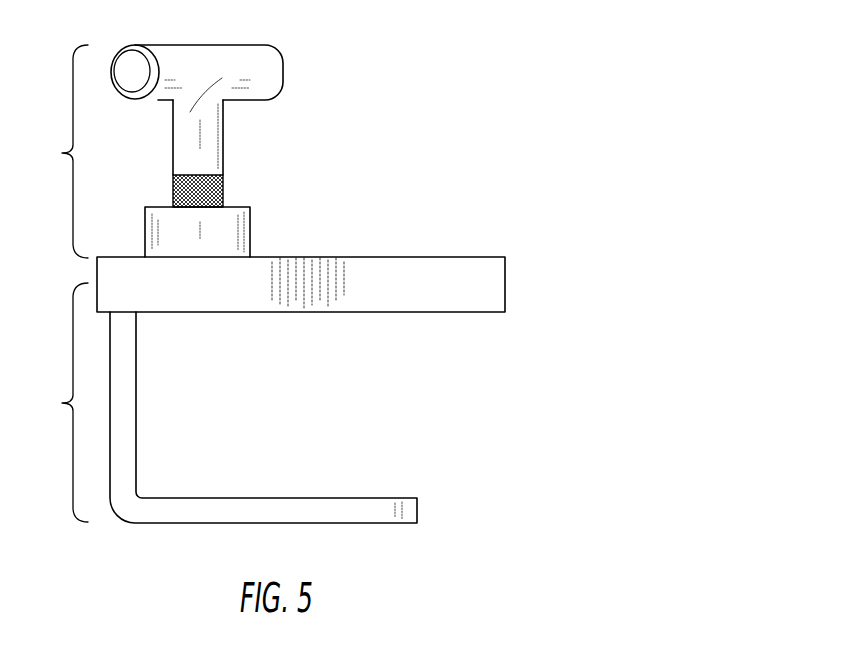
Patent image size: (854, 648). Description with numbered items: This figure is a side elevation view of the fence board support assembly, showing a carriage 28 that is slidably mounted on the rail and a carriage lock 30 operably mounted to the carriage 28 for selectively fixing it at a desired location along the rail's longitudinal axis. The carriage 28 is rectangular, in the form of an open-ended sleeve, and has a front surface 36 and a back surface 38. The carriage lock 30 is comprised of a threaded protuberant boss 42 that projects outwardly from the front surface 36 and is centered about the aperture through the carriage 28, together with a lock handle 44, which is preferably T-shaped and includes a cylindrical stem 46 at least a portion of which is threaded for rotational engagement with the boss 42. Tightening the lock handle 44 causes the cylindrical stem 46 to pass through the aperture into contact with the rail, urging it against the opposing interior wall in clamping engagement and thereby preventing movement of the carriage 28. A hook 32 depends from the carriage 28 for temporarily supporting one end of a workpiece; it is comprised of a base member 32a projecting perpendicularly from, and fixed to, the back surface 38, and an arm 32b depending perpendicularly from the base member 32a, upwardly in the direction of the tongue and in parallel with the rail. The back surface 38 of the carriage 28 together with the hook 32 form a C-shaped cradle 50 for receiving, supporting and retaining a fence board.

The carriage 28 is at (464, 275).
The carriage lock 30 is at (60, 151).
The hook 32 is at (132, 530).
The base member 32a is at (137, 414).
The arm 32b is at (281, 497).
The front surface 36 is at (372, 257).
The back surface 38 is at (372, 312).
The threaded protuberant boss 42 is at (235, 232).
The lock handle 44 is at (264, 73).
The cylindrical stem 46 is at (210, 157).
The C-shaped cradle 50 is at (59, 402).